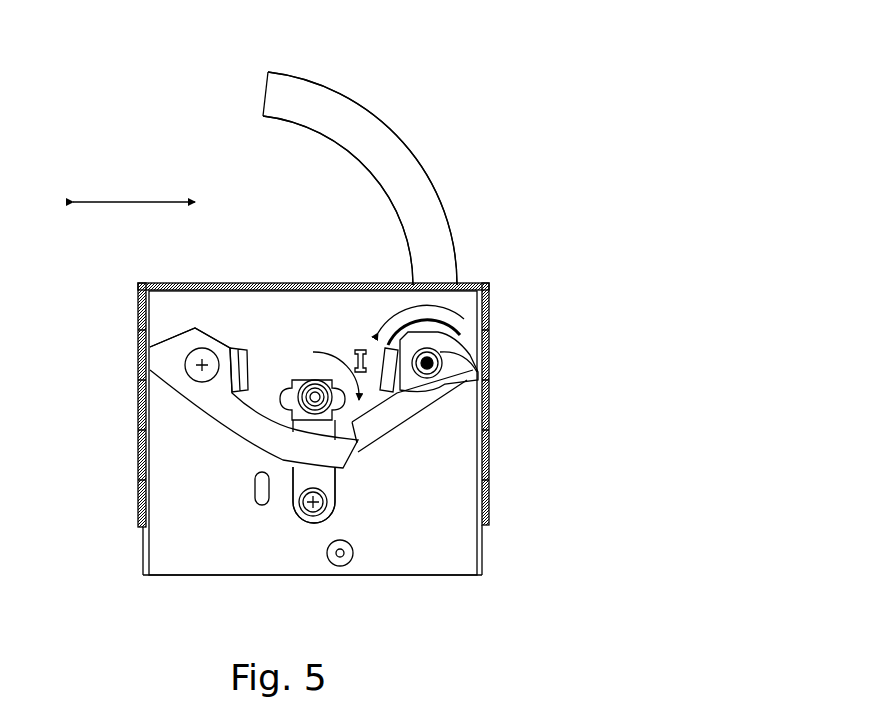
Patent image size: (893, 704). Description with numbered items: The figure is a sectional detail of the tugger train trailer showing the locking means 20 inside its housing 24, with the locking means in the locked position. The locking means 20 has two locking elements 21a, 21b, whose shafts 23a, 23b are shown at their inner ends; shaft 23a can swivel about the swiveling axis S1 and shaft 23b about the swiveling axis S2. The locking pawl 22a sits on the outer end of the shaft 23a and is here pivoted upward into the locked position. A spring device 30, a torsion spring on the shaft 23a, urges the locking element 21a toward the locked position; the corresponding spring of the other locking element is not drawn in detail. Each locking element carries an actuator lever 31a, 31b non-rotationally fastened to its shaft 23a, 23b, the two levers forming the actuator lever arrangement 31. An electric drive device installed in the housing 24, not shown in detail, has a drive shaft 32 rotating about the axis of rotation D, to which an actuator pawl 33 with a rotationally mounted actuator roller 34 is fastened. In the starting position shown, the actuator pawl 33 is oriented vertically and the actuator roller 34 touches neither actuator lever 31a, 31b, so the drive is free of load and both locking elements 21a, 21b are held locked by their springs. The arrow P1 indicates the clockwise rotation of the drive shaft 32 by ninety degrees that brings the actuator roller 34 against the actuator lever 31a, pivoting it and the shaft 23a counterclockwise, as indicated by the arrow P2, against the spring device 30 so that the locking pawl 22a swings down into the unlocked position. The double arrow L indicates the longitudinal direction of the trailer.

The locking means 20 is at (477, 113).
The locking element 21a is at (325, 80).
The locking element 21b is at (182, 318).
The locking pawl 22a is at (363, 127).
The shaft 23a is at (442, 362).
The shaft 23b is at (195, 355).
The housing 24 is at (143, 537).
The spring device 30 is at (445, 345).
The lever arrangement 31 is at (313, 414).
The actuator lever 31a is at (407, 417).
The actuator lever 31b is at (250, 410).
The drive shaft 32 is at (316, 518).
The actuator pawl 33 is at (293, 378).
The actuator roller 34 is at (317, 378).
The arrow P1 is at (353, 348).
The arrow P2 is at (388, 346).
The swiveling axis S1 is at (455, 390).
The swiveling axis S2 is at (208, 358).
The longitudinal direction L is at (145, 200).
The axis of rotation D is at (305, 520).